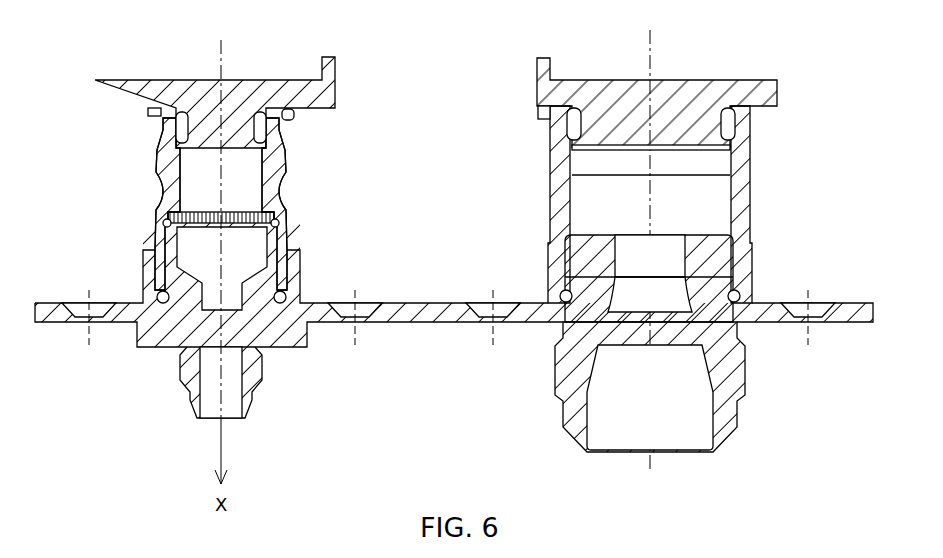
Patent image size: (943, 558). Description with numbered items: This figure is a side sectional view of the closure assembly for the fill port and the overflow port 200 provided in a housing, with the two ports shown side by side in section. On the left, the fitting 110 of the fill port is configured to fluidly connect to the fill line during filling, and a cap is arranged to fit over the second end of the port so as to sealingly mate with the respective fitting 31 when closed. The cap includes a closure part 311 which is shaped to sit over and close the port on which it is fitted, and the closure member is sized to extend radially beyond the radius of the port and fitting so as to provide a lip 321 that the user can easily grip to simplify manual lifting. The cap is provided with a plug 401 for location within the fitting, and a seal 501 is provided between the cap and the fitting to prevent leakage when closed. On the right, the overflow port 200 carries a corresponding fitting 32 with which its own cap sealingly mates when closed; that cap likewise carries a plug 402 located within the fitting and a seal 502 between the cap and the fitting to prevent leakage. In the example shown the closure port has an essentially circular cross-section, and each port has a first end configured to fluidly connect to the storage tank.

The closure part 311 is at (143, 92).
The lip 321 is at (150, 109).
The fitting 110 is at (156, 168).
The fitting 31 is at (160, 226).
The seal 501 is at (292, 115).
The plug 401 is at (268, 130).
The seal 502 is at (545, 116).
The plug 402 is at (625, 150).
The fitting 32 is at (752, 190).
The overflow port 200 is at (563, 398).